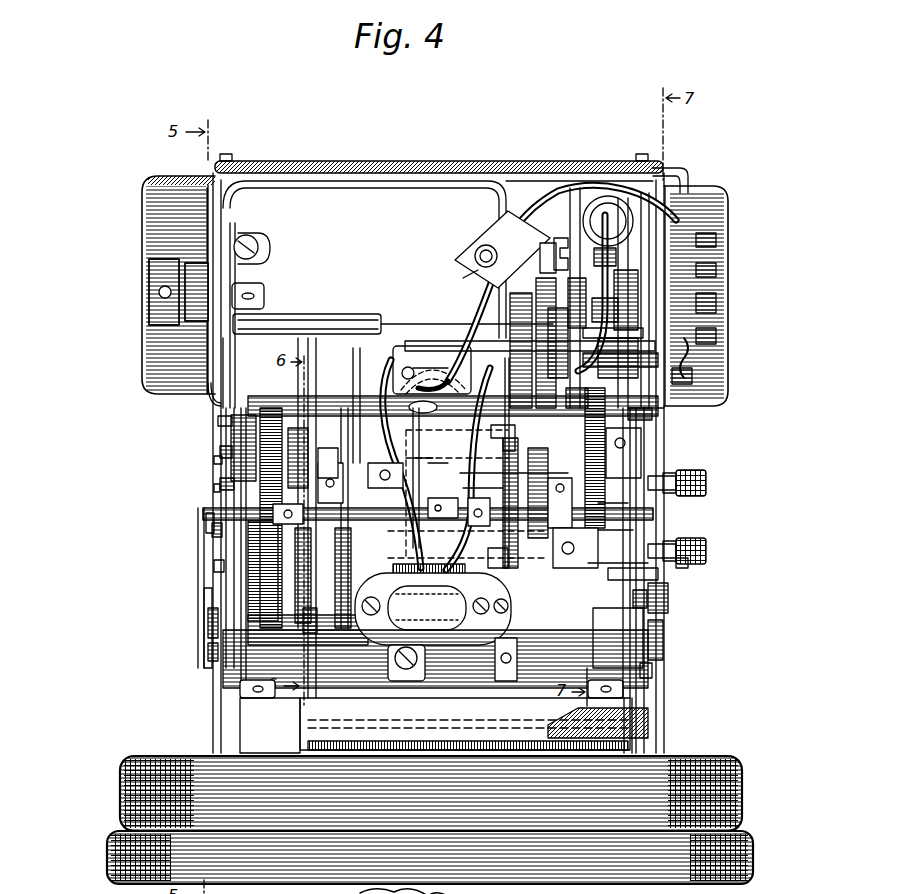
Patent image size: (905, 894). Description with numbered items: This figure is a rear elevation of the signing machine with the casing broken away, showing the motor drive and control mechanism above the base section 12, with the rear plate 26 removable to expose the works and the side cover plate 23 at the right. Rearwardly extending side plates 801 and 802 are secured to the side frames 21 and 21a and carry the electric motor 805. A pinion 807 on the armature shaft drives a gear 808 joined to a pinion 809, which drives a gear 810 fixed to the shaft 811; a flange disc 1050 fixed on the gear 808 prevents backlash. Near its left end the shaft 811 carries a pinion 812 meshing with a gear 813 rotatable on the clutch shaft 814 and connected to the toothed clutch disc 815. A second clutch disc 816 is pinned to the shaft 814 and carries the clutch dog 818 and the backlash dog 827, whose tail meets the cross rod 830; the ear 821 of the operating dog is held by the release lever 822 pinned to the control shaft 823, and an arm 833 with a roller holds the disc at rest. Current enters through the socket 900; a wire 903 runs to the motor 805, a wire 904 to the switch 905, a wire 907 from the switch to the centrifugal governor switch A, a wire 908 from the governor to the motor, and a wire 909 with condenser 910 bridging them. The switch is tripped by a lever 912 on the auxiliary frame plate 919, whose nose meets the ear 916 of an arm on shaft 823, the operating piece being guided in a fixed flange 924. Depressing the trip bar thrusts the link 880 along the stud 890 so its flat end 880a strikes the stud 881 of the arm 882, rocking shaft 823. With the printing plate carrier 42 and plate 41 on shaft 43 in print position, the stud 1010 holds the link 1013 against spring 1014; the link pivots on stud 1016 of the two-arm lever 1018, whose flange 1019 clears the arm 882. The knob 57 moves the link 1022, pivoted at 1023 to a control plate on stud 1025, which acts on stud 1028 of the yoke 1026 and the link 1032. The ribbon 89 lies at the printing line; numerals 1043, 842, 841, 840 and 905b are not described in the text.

The rear plate 26 is at (282, 155).
The electric motor 805 is at (362, 196).
The wire 907 is at (534, 194).
The pinion 807 is at (560, 213).
The gear 808 is at (566, 218).
The condenser 910 is at (604, 198).
The wire 909 is at (707, 238).
The centrifugal governor switch A is at (708, 303).
The pinion 809 is at (666, 338).
The gear 810 is at (662, 370).
The side plate 801 is at (633, 403).
The side cover plate 23 is at (659, 431).
The knob 1043 is at (699, 471).
The lever 842 is at (594, 497).
The lever arm 841 is at (594, 527).
The knob 57 is at (699, 537).
The stud 1028 is at (678, 557).
The link 1022 is at (586, 558).
The bracket 840 is at (618, 574).
The stud 1025 is at (632, 591).
The yoke member 1026 is at (658, 599).
The shaft 43 is at (594, 615).
The pivot 1023 is at (648, 619).
The cross rod 830 is at (634, 664).
The side frame 21 is at (616, 701).
The printing plate 41 is at (598, 731).
The base section 12 is at (733, 781).
The wire 908 is at (510, 238).
The flange disc 1050 is at (460, 276).
The switch 905 is at (457, 345).
The clutch dog 818 is at (304, 452).
The ear 821 is at (344, 445).
The release lever 822 is at (328, 455).
The pinion 812 is at (267, 400).
The shaft 811 is at (376, 418).
The link 880 is at (213, 415).
The flat end of link 880a is at (213, 443).
The stud 881 is at (207, 452).
The arm 882 is at (213, 477).
The stud 890 is at (208, 480).
The control shaft 823 is at (247, 505).
The link 1013 is at (200, 517).
The stud 1016 is at (203, 522).
The gear 813 is at (262, 543).
The two-arm lever 1018 is at (213, 557).
The spring 1014 is at (193, 568).
The formed flange 1019 is at (201, 613).
The stud 1010 is at (194, 644).
The side plate 802 is at (204, 657).
The wire 903 is at (407, 452).
The lever 912 is at (483, 424).
The ear 916 is at (483, 444).
The fixed flange 924 is at (436, 454).
The wire 904 is at (495, 478).
The clutch shaft 814 is at (433, 494).
The arm 833 is at (390, 474).
The second clutch disc 816 is at (403, 534).
The link 1032 is at (484, 540).
The backlash dog 827 is at (303, 623).
The clutch disc 815 is at (368, 640).
The socket 900 is at (456, 620).
The auxiliary frame plate 919 is at (486, 673).
The side frame 21a is at (232, 703).
The printing plate carrier 42 is at (280, 704).
The transfer member 89 is at (264, 720).
The block 905b is at (346, 889).